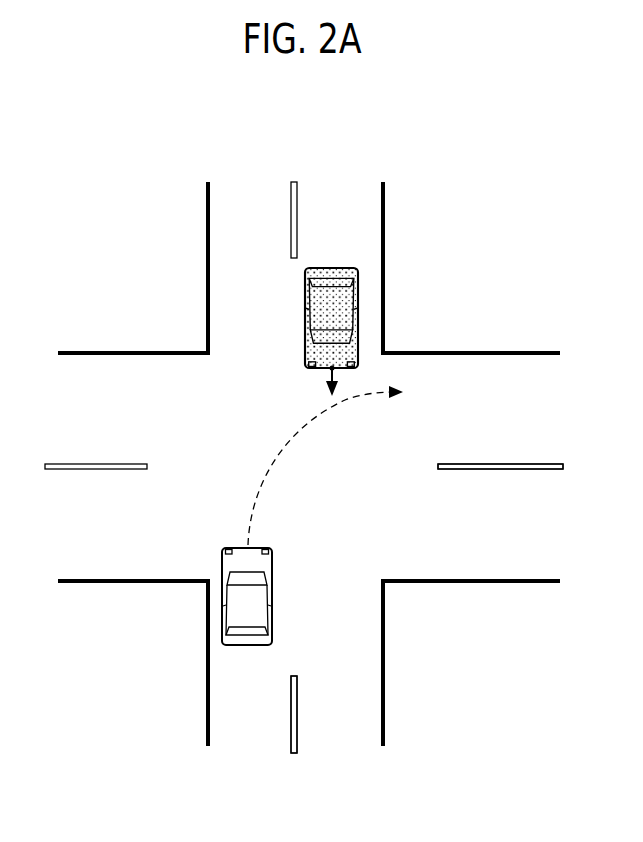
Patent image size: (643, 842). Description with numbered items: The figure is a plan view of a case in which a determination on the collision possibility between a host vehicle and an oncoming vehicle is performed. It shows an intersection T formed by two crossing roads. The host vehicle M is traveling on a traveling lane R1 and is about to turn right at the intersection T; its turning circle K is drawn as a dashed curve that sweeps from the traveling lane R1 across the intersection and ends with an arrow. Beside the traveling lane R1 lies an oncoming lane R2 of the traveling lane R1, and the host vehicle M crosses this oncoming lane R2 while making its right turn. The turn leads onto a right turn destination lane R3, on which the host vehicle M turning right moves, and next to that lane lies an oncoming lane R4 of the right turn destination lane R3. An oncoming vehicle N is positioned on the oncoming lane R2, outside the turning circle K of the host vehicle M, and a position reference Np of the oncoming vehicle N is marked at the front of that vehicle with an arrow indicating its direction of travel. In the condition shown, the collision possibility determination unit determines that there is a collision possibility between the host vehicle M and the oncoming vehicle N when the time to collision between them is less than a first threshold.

The oncoming vehicle N is at (383, 254).
The position reference of the oncoming vehicle Np is at (332, 368).
The intersection T is at (401, 338).
The turning circle of the host vehicle K is at (290, 432).
The host vehicle M is at (222, 600).
The traveling lane R1 is at (289, 797).
The oncoming lane of the traveling lane R2 is at (381, 797).
The right turn destination lane R3 is at (578, 359).
The oncoming lane of the right turn destination lane R4 is at (578, 477).